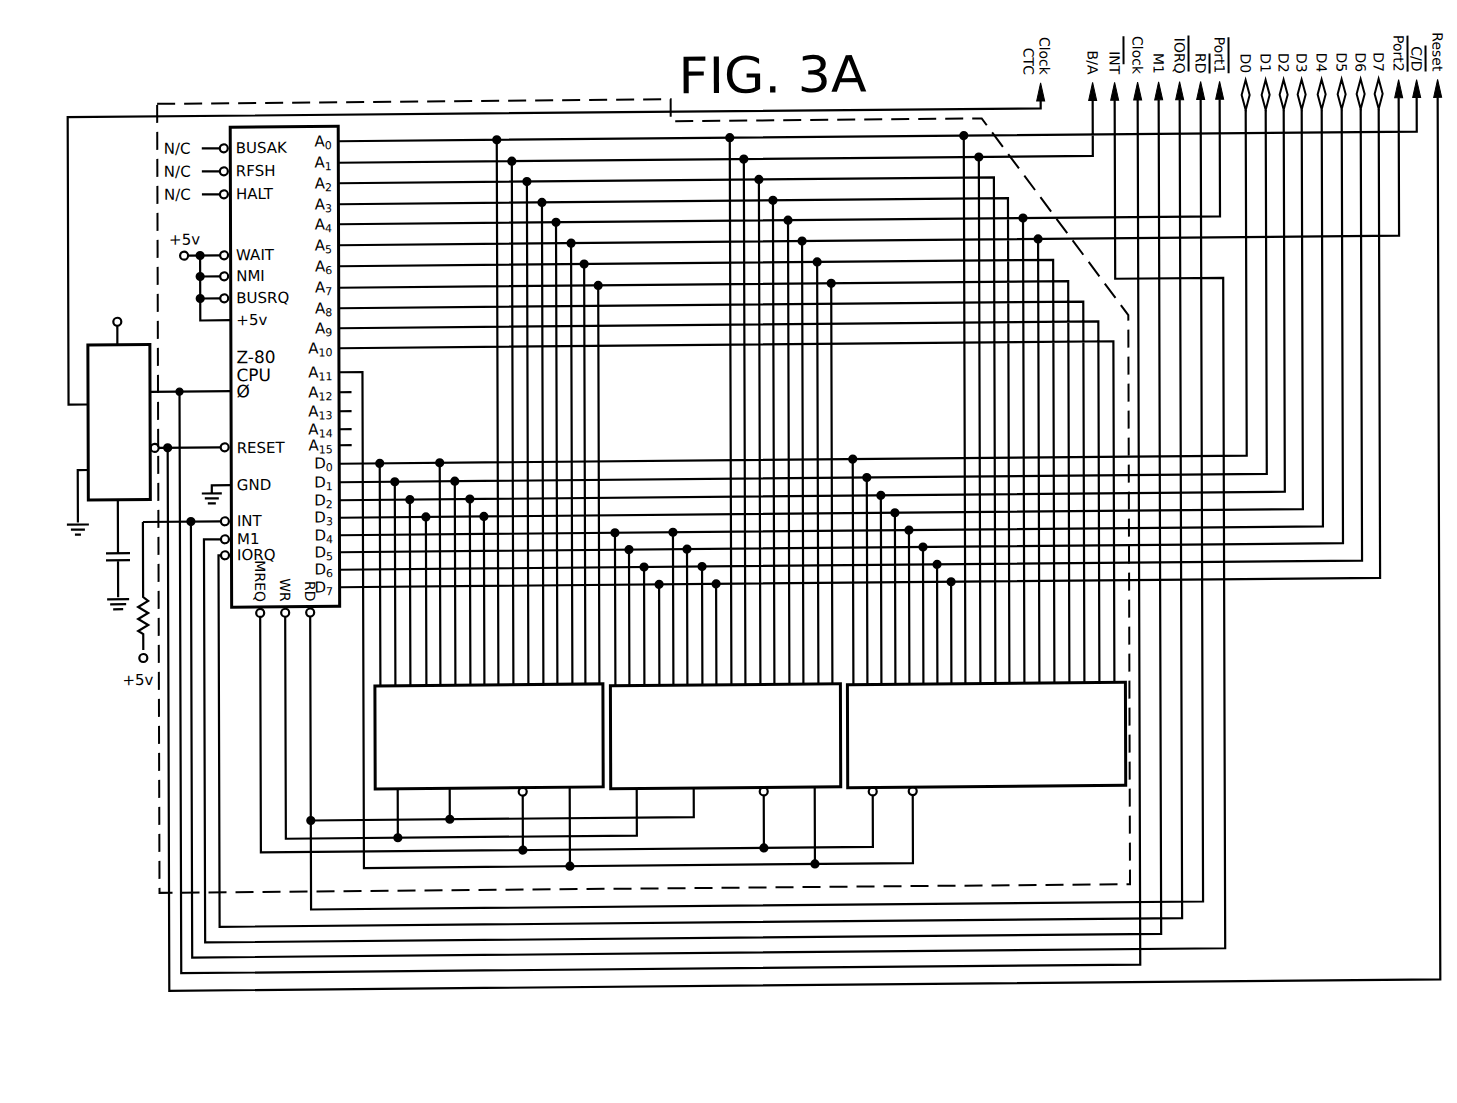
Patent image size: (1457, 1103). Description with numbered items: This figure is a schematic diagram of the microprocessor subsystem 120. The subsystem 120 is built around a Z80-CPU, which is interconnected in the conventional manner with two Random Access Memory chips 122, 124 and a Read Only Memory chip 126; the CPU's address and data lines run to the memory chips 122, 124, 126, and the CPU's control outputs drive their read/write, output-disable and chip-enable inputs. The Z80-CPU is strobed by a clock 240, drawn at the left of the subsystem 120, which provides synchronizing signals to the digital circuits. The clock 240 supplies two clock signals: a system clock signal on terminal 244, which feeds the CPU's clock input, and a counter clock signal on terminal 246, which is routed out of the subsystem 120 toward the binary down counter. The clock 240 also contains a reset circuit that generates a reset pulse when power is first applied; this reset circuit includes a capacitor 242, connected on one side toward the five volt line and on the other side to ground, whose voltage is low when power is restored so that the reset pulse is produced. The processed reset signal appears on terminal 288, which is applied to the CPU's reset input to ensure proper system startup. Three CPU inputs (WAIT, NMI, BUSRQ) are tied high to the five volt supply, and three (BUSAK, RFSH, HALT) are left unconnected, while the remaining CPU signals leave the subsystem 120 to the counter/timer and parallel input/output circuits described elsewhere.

The microprocessor subsystem 120 is at (402, 99).
The random access memory chip 122 is at (489, 776).
The random access memory chip 124 is at (725, 775).
The read only memory chip 126 is at (986, 739).
The clock 240 is at (141, 339).
The capacitor 242 is at (113, 555).
The terminal 244 is at (224, 386).
The terminal 246 is at (80, 399).
The terminal 288 is at (205, 441).